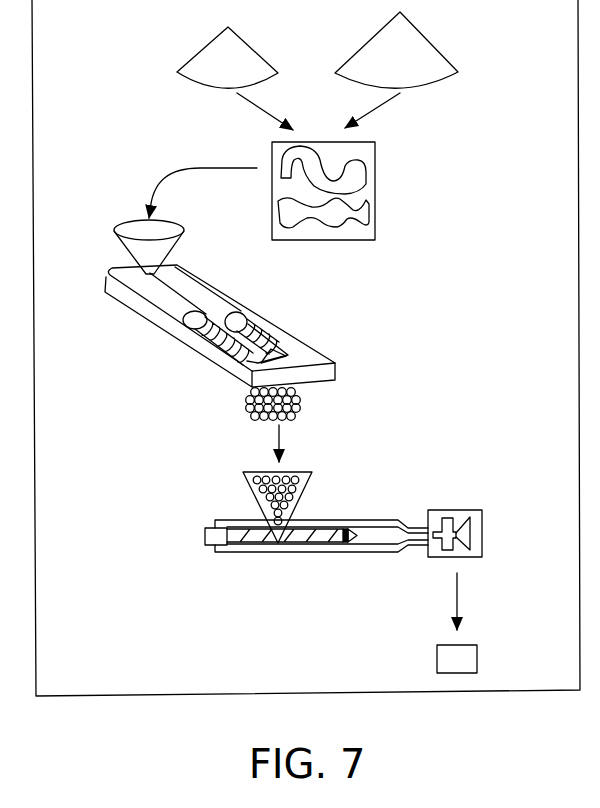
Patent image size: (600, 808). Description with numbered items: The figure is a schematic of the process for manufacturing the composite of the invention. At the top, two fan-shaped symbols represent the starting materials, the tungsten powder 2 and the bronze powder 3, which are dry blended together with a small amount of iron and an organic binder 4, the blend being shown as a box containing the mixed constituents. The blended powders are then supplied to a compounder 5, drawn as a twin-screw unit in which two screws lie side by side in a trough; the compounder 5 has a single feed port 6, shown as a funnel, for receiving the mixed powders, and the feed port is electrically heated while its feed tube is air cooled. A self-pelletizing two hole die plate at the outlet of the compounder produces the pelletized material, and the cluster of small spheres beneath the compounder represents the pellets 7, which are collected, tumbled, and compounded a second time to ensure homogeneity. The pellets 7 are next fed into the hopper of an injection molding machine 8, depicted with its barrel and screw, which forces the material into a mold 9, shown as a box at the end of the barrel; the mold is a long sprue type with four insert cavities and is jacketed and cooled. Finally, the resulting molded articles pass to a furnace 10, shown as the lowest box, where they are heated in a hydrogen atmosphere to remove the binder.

The tungsten powder 2 is at (413, 50).
The bronze powder 3 is at (213, 60).
The organic binder 4 is at (357, 178).
The compounder 5 is at (130, 328).
The feed port 6 is at (167, 245).
The pellets 7 is at (300, 403).
The injection molding machine 8 is at (220, 513).
The mold 9 is at (463, 533).
The furnace 10 is at (468, 658).